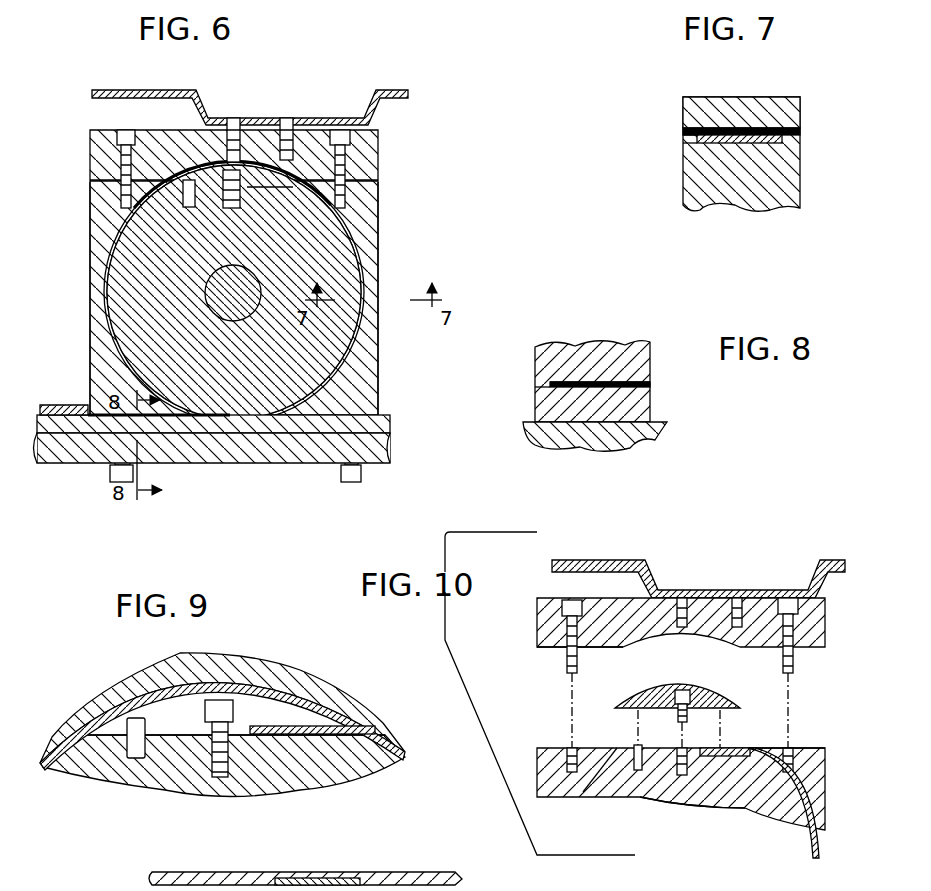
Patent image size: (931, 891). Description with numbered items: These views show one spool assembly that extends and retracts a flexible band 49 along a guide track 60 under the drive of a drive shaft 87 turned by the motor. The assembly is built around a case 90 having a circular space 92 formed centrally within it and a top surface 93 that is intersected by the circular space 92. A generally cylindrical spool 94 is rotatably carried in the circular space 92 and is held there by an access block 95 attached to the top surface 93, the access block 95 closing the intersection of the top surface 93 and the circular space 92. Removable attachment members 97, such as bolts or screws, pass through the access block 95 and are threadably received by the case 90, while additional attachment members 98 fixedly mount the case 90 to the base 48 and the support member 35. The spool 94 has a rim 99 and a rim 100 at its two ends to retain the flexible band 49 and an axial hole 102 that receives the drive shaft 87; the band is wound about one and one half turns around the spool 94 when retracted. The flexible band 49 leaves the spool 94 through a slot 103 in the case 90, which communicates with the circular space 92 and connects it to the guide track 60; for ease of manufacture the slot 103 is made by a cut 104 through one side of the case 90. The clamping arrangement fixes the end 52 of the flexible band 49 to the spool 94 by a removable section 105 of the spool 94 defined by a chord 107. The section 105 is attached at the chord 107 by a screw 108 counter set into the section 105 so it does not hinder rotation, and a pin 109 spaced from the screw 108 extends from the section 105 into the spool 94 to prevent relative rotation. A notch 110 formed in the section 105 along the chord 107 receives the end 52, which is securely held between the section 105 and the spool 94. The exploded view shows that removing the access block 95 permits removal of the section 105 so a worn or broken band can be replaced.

In FIG. 6, the support member 35 is at (290, 118).
In FIG. 10, the support member 35 is at (622, 560).
In FIG. 6, the base 48 is at (270, 445).
In FIG. 8, the base 48 is at (588, 445).
In FIG. 7, the flexible band 49 is at (752, 128).
In FIG. 8, the flexible band 49 is at (600, 378).
In FIG. 9, the flexible band 49 is at (300, 688).
In FIG. 10, the flexible band 49 is at (808, 840).
In FIG. 9, the end of flexible band 52 is at (310, 738).
In FIG. 10, the end of flexible band 52 is at (710, 750).
In FIG. 6, the guide track 60 is at (64, 452).
In FIG. 6, the drive shaft 87 is at (270, 342).
In FIG. 6, the case 90 is at (372, 360).
In FIG. 7, the case 90 is at (730, 108).
In FIG. 8, the case 90 is at (548, 360).
In FIG. 10, the case 90 is at (555, 765).
In FIG. 6, the circular space 92 is at (362, 232).
In FIG. 6, the top surface 93 is at (380, 182).
In FIG. 10, the top surface 93 is at (812, 748).
In FIG. 6, the spool 94 is at (336, 270).
In FIG. 7, the spool 94 is at (730, 195).
In FIG. 9, the spool 94 is at (285, 778).
In FIG. 10, the spool 94 is at (750, 802).
In FIG. 6, the access block 95 is at (88, 150).
In FIG. 9, the access block 95 is at (370, 710).
In FIG. 10, the access block 95 is at (807, 625).
In FIG. 6, the removable attachment members 97 is at (380, 160).
In FIG. 10, the removable attachment members 97 is at (812, 643).
In FIG. 6, the additional attachment members 98 is at (245, 122).
In FIG. 10, the additional attachment members 98 is at (737, 596).
In FIG. 7, the rim 99 is at (688, 140).
In FIG. 7, the rim 100 is at (800, 132).
In FIG. 6, the axial hole 102 is at (252, 303).
In FIG. 6, the slot 103 is at (178, 420).
In FIG. 8, the slot 103 is at (548, 390).
In FIG. 8, the cut 104 is at (655, 385).
In FIG. 6, the removable section 105 is at (224, 170).
In FIG. 9, the removable section 105 is at (170, 735).
In FIG. 10, the removable section 105 is at (660, 705).
In FIG. 9, the chord 107 is at (185, 735).
In FIG. 9, the screw 108 is at (232, 690).
In FIG. 10, the screw 108 is at (690, 698).
In FIG. 9, the pin 109 is at (130, 715).
In FIG. 10, the pin 109 is at (632, 752).
In FIG. 9, the notch 110 is at (272, 700).
In FIG. 10, the notch 110 is at (722, 696).